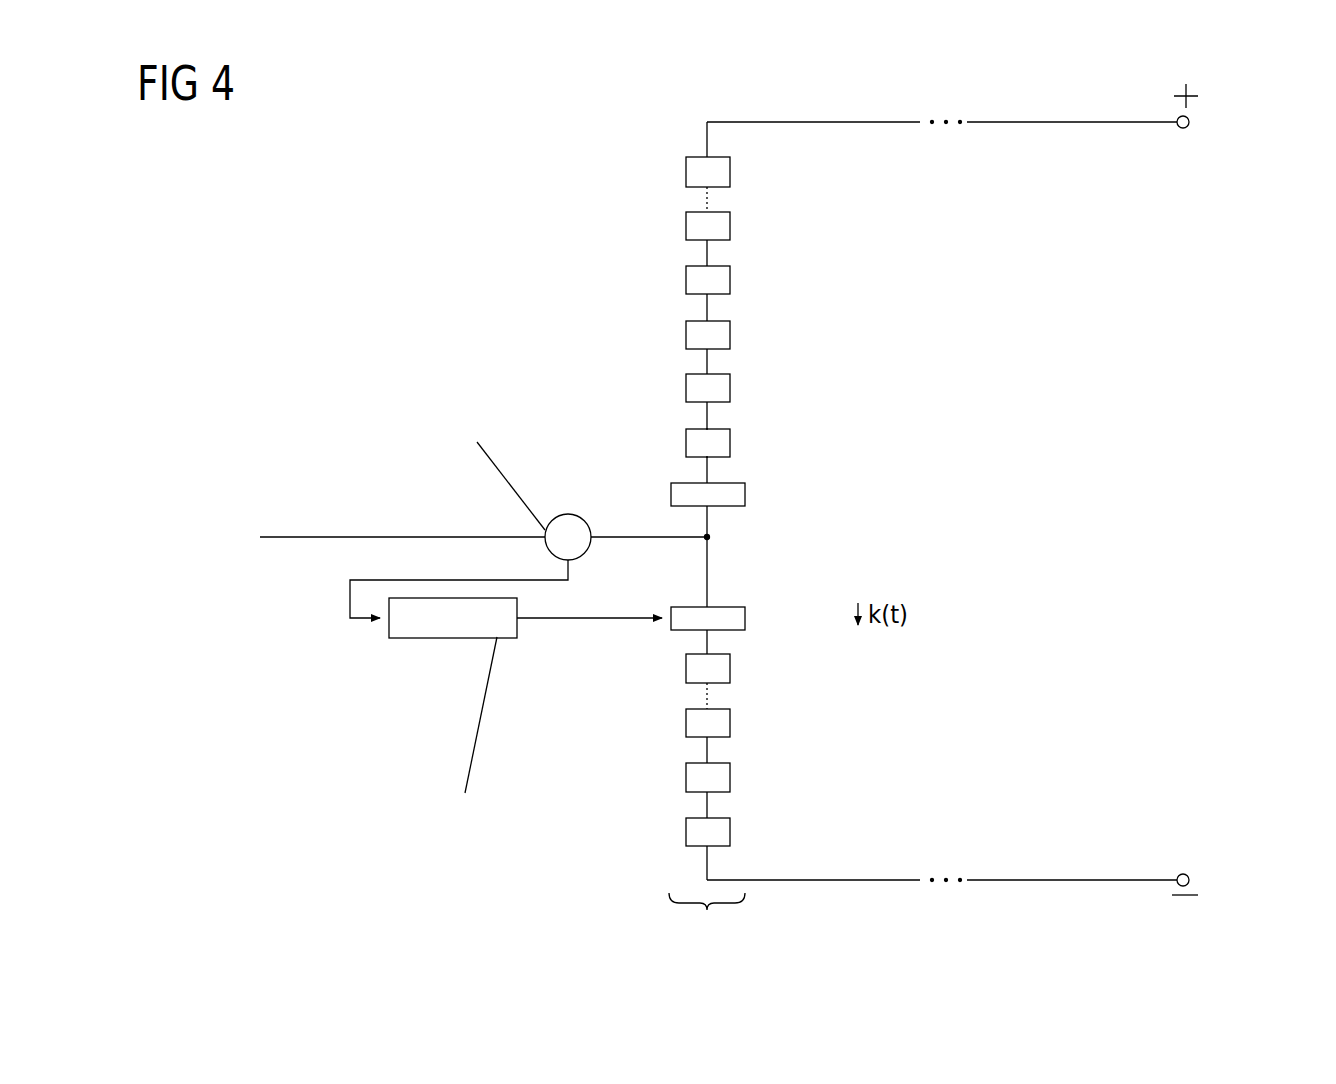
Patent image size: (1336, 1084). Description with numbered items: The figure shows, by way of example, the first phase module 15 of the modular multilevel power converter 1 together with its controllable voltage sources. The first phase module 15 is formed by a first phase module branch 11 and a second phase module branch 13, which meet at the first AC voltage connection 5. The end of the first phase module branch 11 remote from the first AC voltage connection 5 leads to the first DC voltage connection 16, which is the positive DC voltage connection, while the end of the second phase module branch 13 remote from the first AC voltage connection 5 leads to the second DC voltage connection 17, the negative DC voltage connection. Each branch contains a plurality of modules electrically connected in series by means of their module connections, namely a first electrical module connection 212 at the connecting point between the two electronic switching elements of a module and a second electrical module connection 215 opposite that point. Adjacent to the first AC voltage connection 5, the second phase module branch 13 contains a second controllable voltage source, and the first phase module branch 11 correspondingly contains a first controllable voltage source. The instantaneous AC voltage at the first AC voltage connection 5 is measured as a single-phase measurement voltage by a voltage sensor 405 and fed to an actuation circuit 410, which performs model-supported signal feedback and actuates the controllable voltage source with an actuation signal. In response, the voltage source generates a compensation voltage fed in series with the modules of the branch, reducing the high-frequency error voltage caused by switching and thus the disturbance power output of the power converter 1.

The power converter 1 is at (1186, 259).
The first AC voltage connection 5 is at (710, 538).
The first phase module branch 11 is at (701, 281).
The second phase module branch 13 is at (701, 764).
The first phase module 15 is at (707, 918).
The first DC voltage connection 16 is at (1013, 120).
The second DC voltage connection 17 is at (1013, 878).
The first electrical module connection 212 is at (705, 428).
The second electrical module connection 215 is at (705, 458).
The voltage sensor 405 is at (562, 514).
The actuation circuit 410 is at (433, 640).